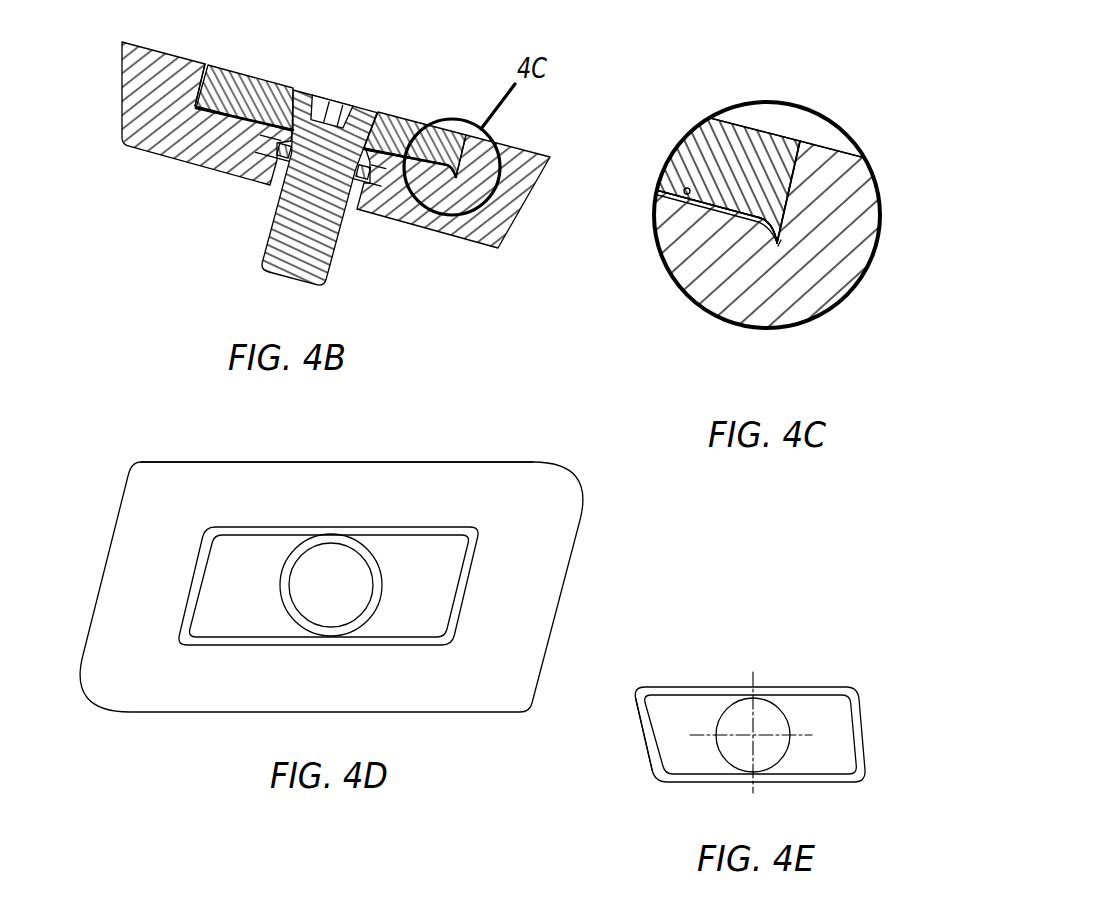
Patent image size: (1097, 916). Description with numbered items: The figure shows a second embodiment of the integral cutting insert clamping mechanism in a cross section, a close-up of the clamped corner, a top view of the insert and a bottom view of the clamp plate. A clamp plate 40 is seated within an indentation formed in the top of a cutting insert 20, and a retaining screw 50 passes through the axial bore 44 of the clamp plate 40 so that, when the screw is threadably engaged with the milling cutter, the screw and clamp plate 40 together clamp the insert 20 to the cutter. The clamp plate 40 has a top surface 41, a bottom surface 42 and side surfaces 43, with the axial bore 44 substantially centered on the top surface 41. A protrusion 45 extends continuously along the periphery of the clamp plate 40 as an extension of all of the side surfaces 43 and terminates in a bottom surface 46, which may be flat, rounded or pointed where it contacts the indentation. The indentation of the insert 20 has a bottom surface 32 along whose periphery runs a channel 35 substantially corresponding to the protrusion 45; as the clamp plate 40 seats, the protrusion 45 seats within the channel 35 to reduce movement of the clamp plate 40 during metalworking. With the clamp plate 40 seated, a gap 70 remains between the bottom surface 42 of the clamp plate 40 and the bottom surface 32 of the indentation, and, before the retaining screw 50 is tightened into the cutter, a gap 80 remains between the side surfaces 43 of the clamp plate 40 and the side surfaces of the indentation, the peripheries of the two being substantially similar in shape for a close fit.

In FIG. 4B, the cutting insert 20 is at (116, 90).
In FIG. 4C, the bottom surface 32 is at (655, 213).
In FIG. 4D, the bottom surface 32 is at (440, 557).
In FIG. 4C, the channel 35 is at (773, 248).
In FIG. 4D, the channel 35 is at (358, 532).
In FIG. 4B, the clamp plate 40 is at (265, 62).
In FIG. 4D, the clamp plate 40 is at (105, 473).
In FIG. 4D, the top surface 41 is at (190, 478).
In FIG. 4C, the bottom surface 42 is at (699, 170).
In FIG. 4E, the bottom surface 42 is at (843, 703).
In FIG. 4C, the side surfaces 43 is at (793, 180).
In FIG. 4E, the side surfaces 43 is at (638, 738).
In FIG. 4E, the axial bore 44 is at (740, 718).
In FIG. 4C, the protrusion 45 is at (773, 238).
In FIG. 4C, the bottom surface 46 is at (778, 246).
In FIG. 4E, the bottom surface 46 is at (783, 690).
In FIG. 4B, the retaining screw 50 is at (347, 83).
In FIG. 4C, the gap 70 is at (667, 190).
In FIG. 4B, the gap 80 is at (206, 62).